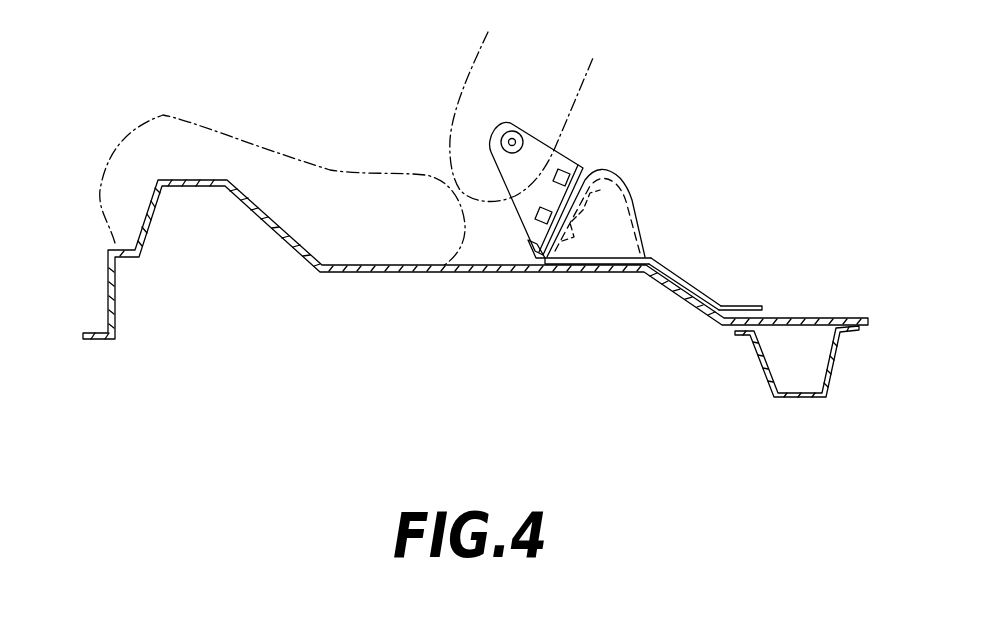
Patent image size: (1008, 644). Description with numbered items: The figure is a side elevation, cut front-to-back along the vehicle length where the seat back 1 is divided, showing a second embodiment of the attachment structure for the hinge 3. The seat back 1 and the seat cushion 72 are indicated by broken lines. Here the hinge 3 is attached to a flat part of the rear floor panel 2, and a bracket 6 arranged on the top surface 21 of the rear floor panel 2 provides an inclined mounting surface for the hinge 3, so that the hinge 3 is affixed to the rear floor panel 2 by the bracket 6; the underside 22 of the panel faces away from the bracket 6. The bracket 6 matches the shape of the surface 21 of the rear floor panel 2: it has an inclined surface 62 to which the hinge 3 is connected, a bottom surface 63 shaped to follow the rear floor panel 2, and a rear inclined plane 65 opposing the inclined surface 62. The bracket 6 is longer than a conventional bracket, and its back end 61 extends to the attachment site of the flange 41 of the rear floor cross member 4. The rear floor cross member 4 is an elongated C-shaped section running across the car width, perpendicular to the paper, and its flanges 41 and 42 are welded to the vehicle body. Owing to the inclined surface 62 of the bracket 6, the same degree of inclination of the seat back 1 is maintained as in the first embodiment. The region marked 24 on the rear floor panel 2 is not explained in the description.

The seat back 1 is at (495, 78).
The rear floor panel 2 is at (475, 268).
The top surface of the rear floor panel 21 is at (357, 265).
The underside of the rear floor panel 22 is at (372, 273).
The portion of dash panel 24 is at (495, 265).
The hinge 3 is at (530, 143).
The rear floor cross member 4 is at (791, 391).
The flange 41 is at (748, 340).
The flange 42 is at (842, 340).
The bracket 6 is at (653, 213).
The back end of the bracket 61 is at (742, 306).
The inclined surface of the bracket 62 is at (535, 252).
The bottom surface of the bracket 63 is at (693, 278).
The rear inclined plane of the bracket 65 is at (644, 210).
The seat cushion 72 is at (172, 138).